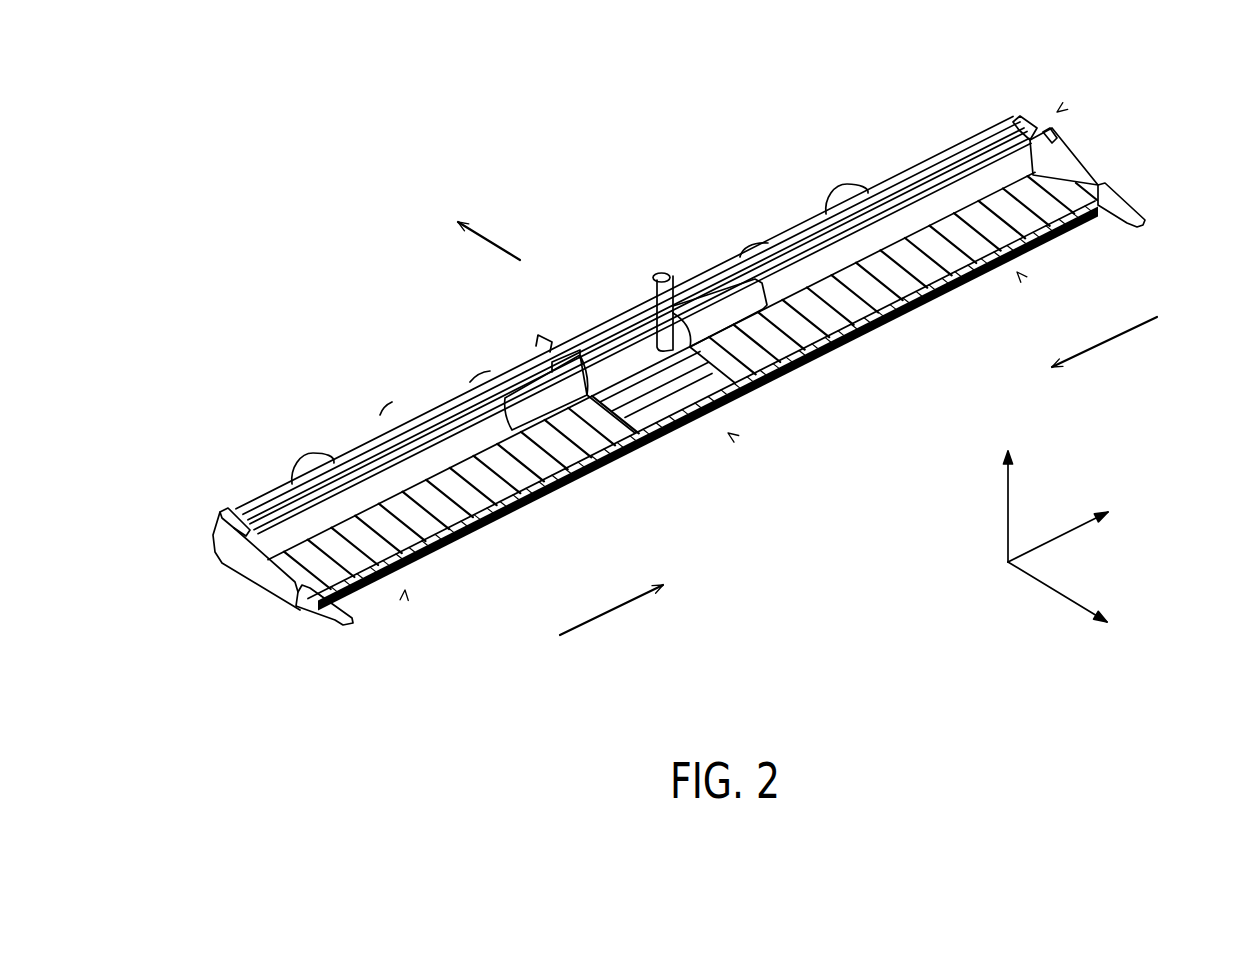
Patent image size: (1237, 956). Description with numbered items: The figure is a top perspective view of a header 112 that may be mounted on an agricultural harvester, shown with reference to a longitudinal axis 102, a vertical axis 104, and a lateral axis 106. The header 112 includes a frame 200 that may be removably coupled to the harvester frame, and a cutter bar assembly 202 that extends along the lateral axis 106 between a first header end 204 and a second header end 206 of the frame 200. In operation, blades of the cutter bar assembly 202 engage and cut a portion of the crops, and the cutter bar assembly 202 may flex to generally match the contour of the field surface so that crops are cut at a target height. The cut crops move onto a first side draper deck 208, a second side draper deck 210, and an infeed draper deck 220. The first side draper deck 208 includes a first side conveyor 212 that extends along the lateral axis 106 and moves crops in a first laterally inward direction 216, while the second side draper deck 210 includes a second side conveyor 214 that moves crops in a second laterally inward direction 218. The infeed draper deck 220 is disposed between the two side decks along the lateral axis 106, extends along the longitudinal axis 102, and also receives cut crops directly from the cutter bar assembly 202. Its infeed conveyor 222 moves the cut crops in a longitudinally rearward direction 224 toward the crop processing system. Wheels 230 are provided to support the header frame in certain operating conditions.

The longitudinal axis 102 is at (1048, 592).
The vertical axis 104 is at (1008, 512).
The lateral axis 106 is at (1072, 532).
The header 112 is at (1057, 112).
The frame 200 is at (798, 226).
The cutter bar assembly 202 is at (553, 493).
The first header end 204 is at (262, 593).
The second header end 206 is at (1080, 160).
The first side draper deck 208 is at (405, 590).
The second side draper deck 210 is at (1017, 272).
The first side conveyor 212 is at (477, 533).
The second side conveyor 214 is at (902, 322).
The first laterally inward direction 216 is at (607, 617).
The second laterally inward direction 218 is at (1100, 345).
The infeed draper deck 220 is at (728, 433).
The infeed conveyor 222 is at (632, 350).
The longitudinally rearward direction 224 is at (502, 242).
The wheels 230 is at (313, 457).